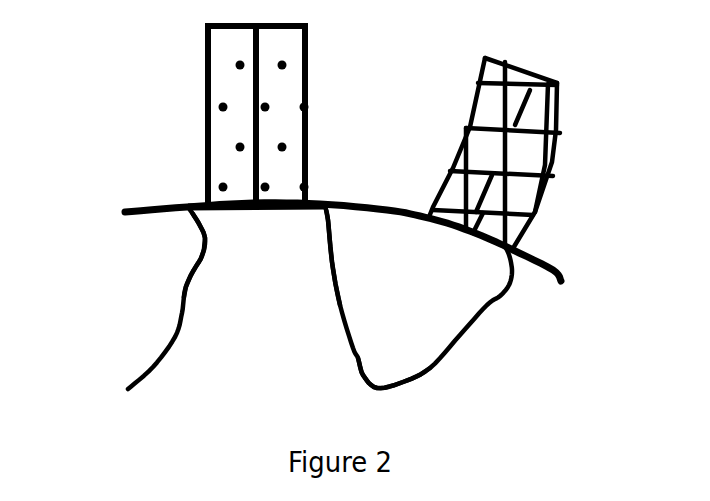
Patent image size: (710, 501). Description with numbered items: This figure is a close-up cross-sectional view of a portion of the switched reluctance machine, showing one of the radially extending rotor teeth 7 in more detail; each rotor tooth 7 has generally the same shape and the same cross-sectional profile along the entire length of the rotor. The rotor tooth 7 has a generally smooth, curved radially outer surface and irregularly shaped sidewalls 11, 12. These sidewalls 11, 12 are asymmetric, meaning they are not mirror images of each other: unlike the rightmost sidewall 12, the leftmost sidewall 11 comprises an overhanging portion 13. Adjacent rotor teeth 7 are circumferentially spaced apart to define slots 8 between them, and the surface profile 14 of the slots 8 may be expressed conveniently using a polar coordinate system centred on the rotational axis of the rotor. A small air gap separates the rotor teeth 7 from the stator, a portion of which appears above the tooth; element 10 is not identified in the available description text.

The rotor tooth 7 is at (255, 327).
The slot 8 is at (445, 308).
The insert 10 is at (250, 220).
The leftmost sidewall 11 is at (181, 278).
The rightmost sidewall 12 is at (345, 270).
The overhanging portion 13 is at (183, 217).
The surface profile 14 is at (411, 359).